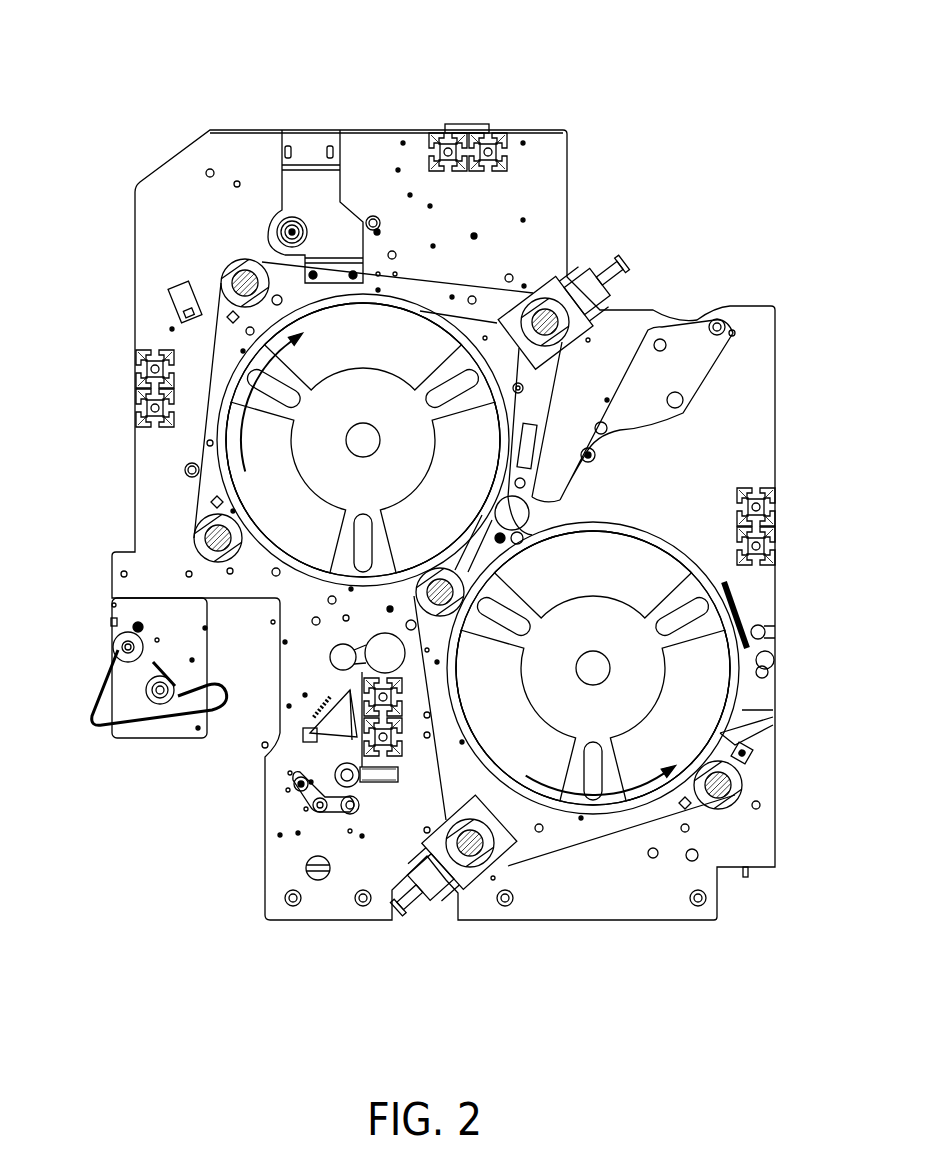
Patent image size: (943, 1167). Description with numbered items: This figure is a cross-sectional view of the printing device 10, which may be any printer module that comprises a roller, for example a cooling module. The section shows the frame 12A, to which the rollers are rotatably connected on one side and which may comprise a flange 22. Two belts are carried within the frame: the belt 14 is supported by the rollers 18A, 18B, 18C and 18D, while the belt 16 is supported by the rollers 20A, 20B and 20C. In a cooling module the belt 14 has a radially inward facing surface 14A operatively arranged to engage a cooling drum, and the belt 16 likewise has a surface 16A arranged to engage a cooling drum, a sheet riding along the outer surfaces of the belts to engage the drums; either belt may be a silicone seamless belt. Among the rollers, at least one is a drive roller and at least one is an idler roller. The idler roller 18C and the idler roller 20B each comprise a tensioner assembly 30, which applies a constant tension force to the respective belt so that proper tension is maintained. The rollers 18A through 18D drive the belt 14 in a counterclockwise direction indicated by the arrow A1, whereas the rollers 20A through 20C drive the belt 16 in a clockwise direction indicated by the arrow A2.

The printing device 10 is at (238, 88).
The frame 12A is at (280, 872).
The belt 14 is at (212, 352).
The radially inward facing surface 14A is at (345, 298).
The arrow A1 is at (240, 425).
The belt 16 is at (612, 805).
The belt surface 16A is at (490, 770).
The arrow A2 is at (617, 805).
The roller 18A is at (210, 536).
The roller 18B is at (237, 277).
The idler roller 18C is at (543, 292).
The roller 18D is at (511, 512).
The roller 20A is at (425, 588).
The idler roller 20B is at (482, 858).
The roller 20C is at (742, 786).
The flange 22 is at (580, 314).
The tensioner assembly 30 is at (683, 204).